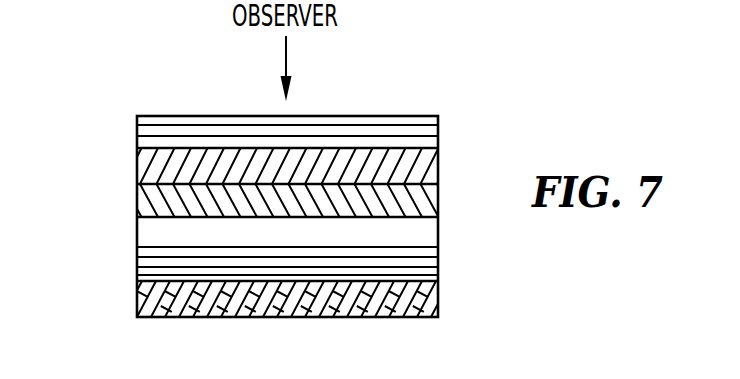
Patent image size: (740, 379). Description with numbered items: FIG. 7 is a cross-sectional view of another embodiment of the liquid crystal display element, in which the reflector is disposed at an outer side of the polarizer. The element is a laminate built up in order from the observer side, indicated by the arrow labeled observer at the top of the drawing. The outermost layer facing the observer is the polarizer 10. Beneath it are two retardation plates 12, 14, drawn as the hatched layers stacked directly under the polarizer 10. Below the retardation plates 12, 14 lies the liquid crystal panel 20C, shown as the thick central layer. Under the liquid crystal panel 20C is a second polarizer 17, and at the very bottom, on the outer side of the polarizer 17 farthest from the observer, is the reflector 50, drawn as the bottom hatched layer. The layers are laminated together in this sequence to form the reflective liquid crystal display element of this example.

The polarizer 10 is at (137, 128).
The retardation plate 12 is at (137, 164).
The retardation plate 14 is at (137, 196).
The liquid crystal panel 20C is at (137, 237).
The polarizer 17 is at (137, 268).
The reflector 50 is at (181, 318).